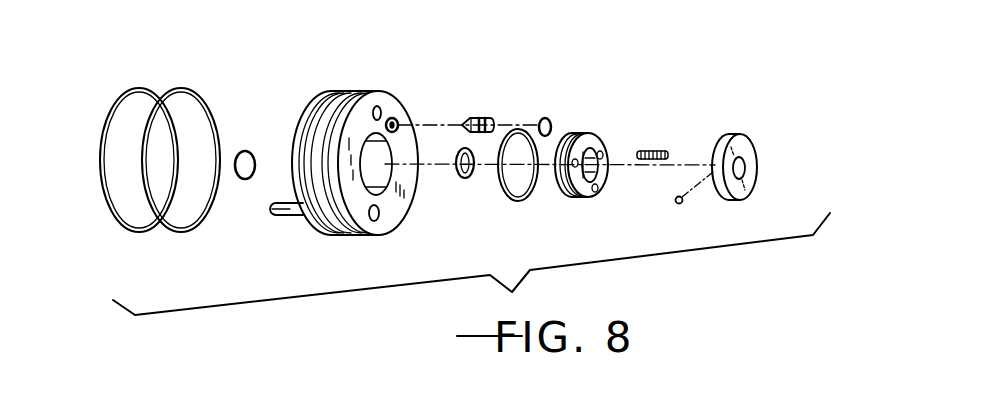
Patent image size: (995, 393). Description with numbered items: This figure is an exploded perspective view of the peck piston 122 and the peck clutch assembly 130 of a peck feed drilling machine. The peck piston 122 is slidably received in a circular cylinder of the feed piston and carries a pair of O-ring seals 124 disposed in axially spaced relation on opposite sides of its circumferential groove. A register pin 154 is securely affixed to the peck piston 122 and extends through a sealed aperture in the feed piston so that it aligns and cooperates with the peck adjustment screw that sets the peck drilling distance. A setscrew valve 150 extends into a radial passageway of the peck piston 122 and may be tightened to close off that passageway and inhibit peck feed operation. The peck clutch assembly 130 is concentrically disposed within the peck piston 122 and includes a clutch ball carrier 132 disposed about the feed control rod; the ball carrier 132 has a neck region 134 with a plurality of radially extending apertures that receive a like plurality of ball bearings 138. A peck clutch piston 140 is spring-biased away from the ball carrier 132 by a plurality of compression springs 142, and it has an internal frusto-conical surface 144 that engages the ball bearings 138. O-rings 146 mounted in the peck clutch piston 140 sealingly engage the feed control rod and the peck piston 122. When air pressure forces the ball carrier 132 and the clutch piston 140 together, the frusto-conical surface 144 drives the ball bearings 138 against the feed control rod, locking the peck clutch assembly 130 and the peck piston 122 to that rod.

The peck piston 122 is at (388, 106).
The O-ring seals 124 is at (136, 88).
The peck clutch assembly 130 is at (668, 76).
The clutch ball carrier 132 is at (742, 148).
The neck region 134 is at (777, 139).
The ball bearings 138 is at (680, 205).
The peck clutch piston 140 is at (599, 161).
The compression springs 142 is at (652, 148).
The frusto-conical surface 144 is at (607, 177).
The O-rings 146 is at (508, 200).
The setscrew valve 150 is at (487, 117).
The register pin 154 is at (286, 217).